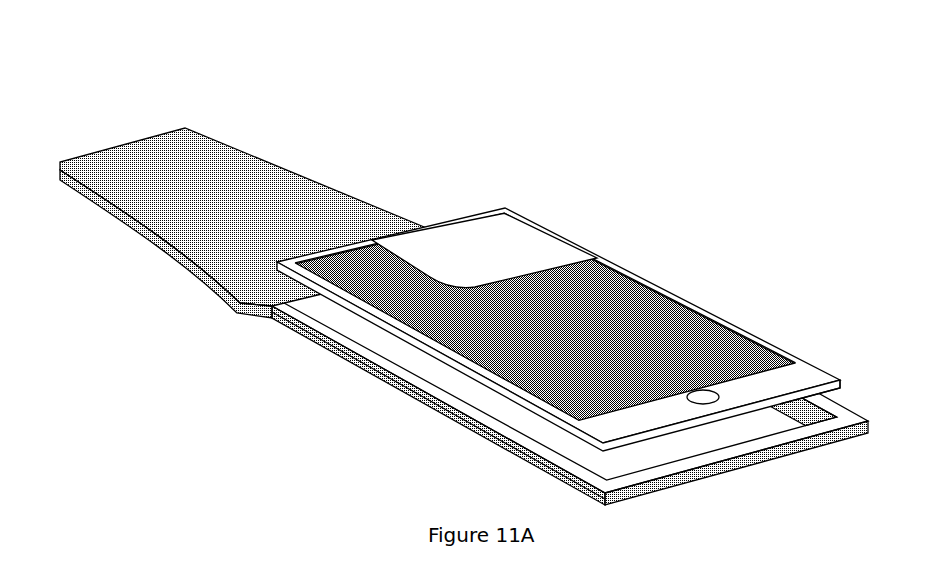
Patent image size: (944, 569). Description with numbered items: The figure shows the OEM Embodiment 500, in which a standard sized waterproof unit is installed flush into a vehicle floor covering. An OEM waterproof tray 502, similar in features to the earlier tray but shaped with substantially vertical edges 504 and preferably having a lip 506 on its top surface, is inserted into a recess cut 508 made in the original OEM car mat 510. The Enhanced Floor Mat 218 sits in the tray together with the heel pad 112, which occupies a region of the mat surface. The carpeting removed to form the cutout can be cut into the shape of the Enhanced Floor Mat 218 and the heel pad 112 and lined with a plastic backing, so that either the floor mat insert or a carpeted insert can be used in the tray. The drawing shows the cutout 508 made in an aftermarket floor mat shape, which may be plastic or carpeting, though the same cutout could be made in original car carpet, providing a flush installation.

The OEM Embodiment 500 is at (117, 73).
The heel pad 112 is at (495, 235).
The Enhanced Floor Mat 218 is at (617, 310).
The OEM waterproof tray 502 is at (807, 365).
The vertical edges 504 is at (767, 403).
The lip 506 is at (840, 380).
The recess cut 508 is at (353, 338).
The OEM car mat 510 is at (212, 225).